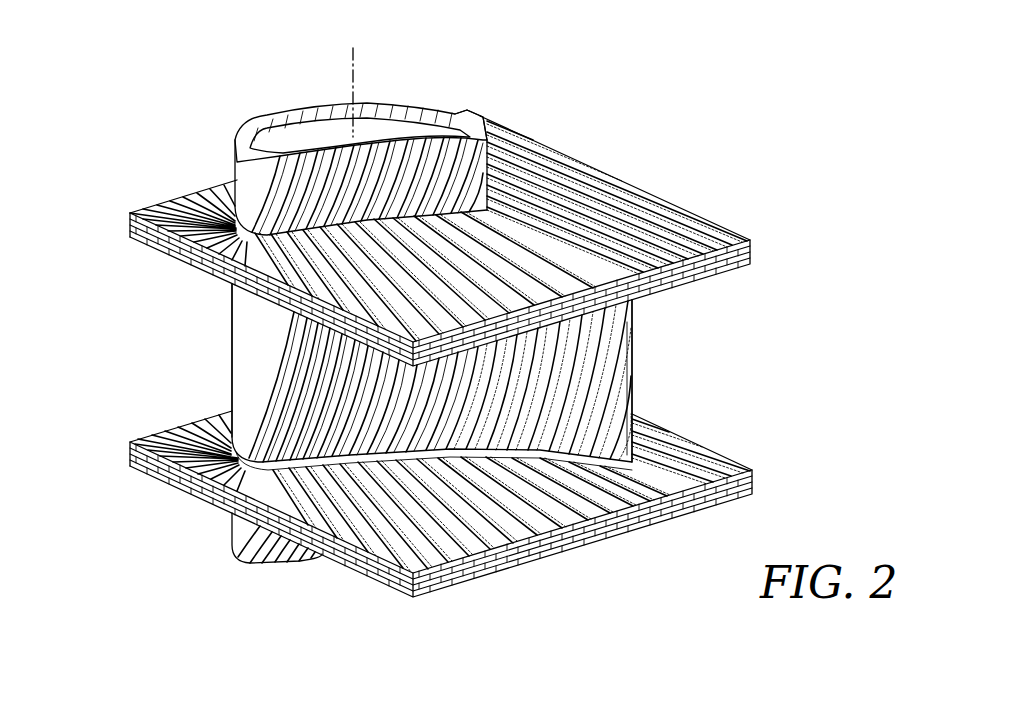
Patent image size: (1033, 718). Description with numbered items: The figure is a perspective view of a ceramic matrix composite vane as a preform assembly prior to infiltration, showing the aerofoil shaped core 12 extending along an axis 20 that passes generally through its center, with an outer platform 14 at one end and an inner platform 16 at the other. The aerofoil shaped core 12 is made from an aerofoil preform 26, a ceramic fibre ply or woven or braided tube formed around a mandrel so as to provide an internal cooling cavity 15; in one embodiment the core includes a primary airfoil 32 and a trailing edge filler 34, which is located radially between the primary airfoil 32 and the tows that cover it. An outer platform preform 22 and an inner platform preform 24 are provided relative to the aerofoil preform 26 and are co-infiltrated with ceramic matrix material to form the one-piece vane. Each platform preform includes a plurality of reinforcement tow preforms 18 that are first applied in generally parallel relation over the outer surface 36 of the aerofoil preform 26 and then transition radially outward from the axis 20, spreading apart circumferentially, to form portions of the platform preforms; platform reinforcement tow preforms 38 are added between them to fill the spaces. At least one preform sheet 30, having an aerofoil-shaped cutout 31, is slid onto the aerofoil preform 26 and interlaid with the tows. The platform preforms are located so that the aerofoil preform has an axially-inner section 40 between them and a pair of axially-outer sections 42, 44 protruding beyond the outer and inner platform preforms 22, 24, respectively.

The aerofoil shaped core 12 is at (433, 377).
The outer platform 14 is at (450, 228).
The internal cooling cavity 15 is at (267, 131).
The inner platform 16 is at (450, 468).
The reinforcement tow preforms 18 is at (600, 157).
The axis 20 is at (352, 90).
The outer platform preform 22 is at (118, 205).
The inner platform preform 24 is at (118, 435).
The aerofoil preform 26 is at (484, 128).
The preform sheet 30 is at (752, 255).
The aerofoil-shaped cutout 31 is at (464, 186).
The primary airfoil 32 is at (245, 383).
The trailing edge filler 34 is at (634, 337).
The outer surface 36 is at (220, 318).
The platform reinforcement tow preforms 38 is at (665, 213).
The axially-inner section 40 is at (648, 352).
The axially-outer section 42 is at (373, 141).
The axially-outer section 44 is at (218, 528).